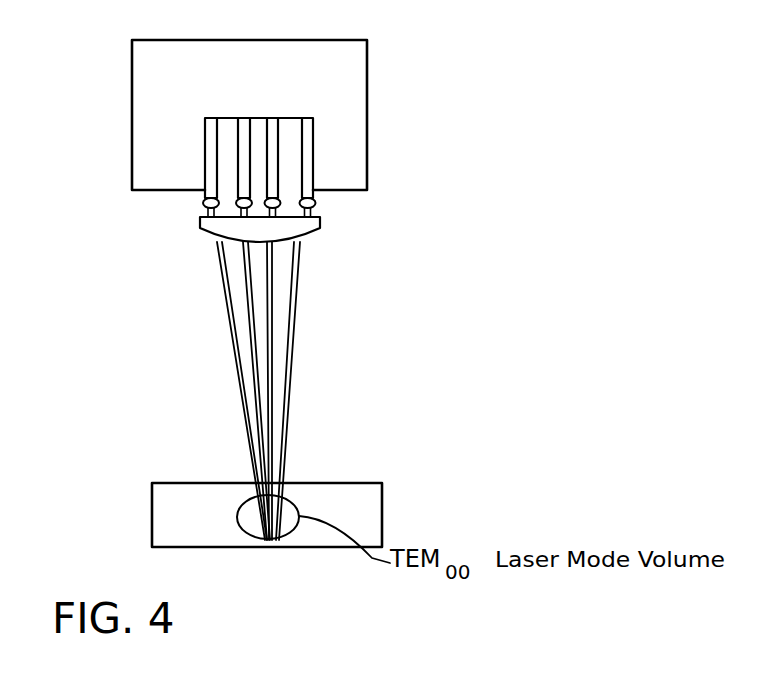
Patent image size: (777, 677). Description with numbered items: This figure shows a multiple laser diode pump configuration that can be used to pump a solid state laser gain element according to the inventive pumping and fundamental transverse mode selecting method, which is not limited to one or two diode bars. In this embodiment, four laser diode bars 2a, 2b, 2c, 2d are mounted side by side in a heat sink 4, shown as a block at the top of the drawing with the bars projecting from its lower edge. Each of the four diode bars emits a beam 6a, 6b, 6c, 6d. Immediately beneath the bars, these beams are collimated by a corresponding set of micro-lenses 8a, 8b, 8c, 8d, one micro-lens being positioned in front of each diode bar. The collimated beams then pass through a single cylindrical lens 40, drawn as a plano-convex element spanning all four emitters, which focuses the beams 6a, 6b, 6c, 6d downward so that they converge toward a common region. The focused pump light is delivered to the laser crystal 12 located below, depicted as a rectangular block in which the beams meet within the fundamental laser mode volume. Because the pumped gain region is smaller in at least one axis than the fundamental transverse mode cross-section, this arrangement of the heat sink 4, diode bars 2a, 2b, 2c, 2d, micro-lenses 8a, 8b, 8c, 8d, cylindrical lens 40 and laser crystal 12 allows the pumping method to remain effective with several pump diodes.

The heat sink 4 is at (323, 40).
The laser diode bar 2a is at (205, 147).
The laser diode bar 2b is at (243, 121).
The laser diode bar 2c is at (272, 121).
The laser diode bar 2d is at (310, 121).
The micro-lens 8a is at (203, 205).
The micro-lens 8b is at (240, 208).
The micro-lens 8c is at (278, 207).
The micro-lens 8d is at (314, 203).
The cylindrical lens 40 is at (200, 229).
The beam 6a is at (232, 341).
The beam 6b is at (252, 378).
The beam 6c is at (272, 377).
The beam 6d is at (297, 332).
The laser crystal 12 is at (152, 490).